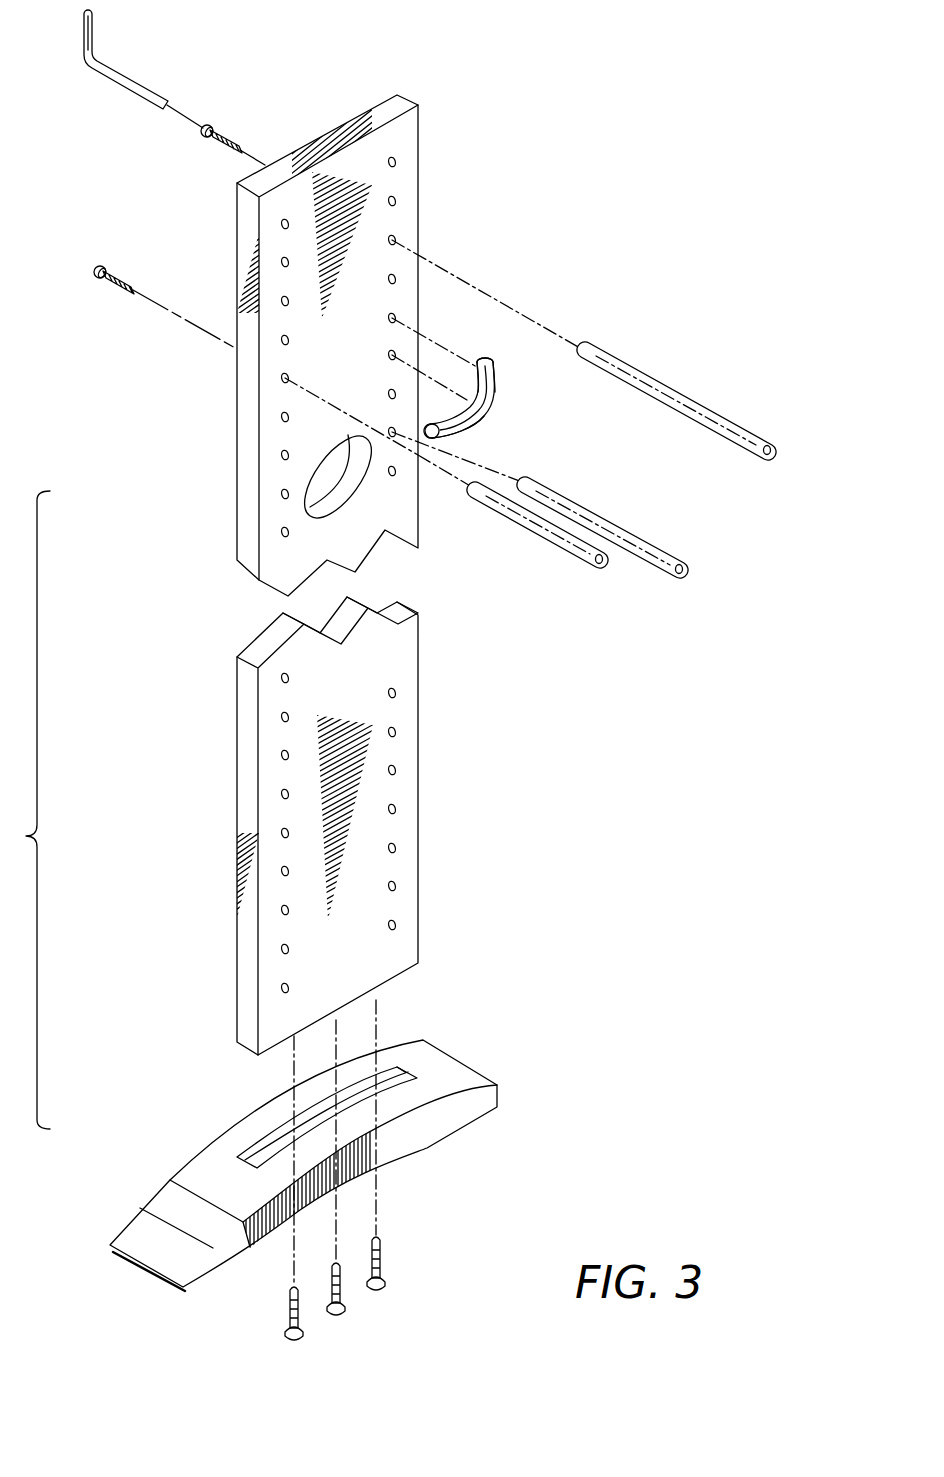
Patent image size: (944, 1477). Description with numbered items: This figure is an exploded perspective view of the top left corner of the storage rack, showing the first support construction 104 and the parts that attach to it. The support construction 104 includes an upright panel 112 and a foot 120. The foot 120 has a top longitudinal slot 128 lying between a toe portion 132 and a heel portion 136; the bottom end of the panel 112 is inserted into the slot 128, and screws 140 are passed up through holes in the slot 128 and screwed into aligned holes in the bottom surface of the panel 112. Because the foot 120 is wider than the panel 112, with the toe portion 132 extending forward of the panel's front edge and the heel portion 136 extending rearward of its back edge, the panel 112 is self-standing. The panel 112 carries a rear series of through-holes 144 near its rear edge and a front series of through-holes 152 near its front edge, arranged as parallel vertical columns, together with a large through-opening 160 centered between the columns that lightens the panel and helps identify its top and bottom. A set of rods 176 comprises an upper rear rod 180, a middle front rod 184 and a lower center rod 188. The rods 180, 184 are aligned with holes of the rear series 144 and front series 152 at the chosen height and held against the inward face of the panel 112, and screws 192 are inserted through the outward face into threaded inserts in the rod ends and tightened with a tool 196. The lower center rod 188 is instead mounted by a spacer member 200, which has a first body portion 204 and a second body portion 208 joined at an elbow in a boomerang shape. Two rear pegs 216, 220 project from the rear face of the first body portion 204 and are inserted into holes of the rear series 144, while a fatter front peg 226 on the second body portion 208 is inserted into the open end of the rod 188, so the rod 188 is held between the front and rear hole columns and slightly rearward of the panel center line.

The first support construction 104 is at (462, 186).
The upright panel 112 is at (408, 130).
The foot 120 is at (460, 1107).
The top longitudinal slot 128 is at (392, 1077).
The toe portion 132 is at (160, 1233).
The heel portion 136 is at (474, 1080).
The screws 140 is at (382, 1266).
The rear series of through-holes 144 is at (395, 771).
The front series of through-holes 152 is at (285, 552).
The large through-opening 160 is at (352, 483).
The set of rods 176 is at (643, 590).
The upper rear rod 180 is at (633, 372).
The middle front rod 184 is at (565, 543).
The lower center rod 188 is at (641, 543).
The screws 192 is at (232, 133).
The tool 196 is at (131, 80).
The spacer member 200 is at (505, 400).
The first body portion 204 is at (491, 370).
The second body portion 208 is at (490, 420).
The rear peg 216 is at (482, 362).
The rear peg 220 is at (472, 392).
The front peg 226 is at (468, 438).